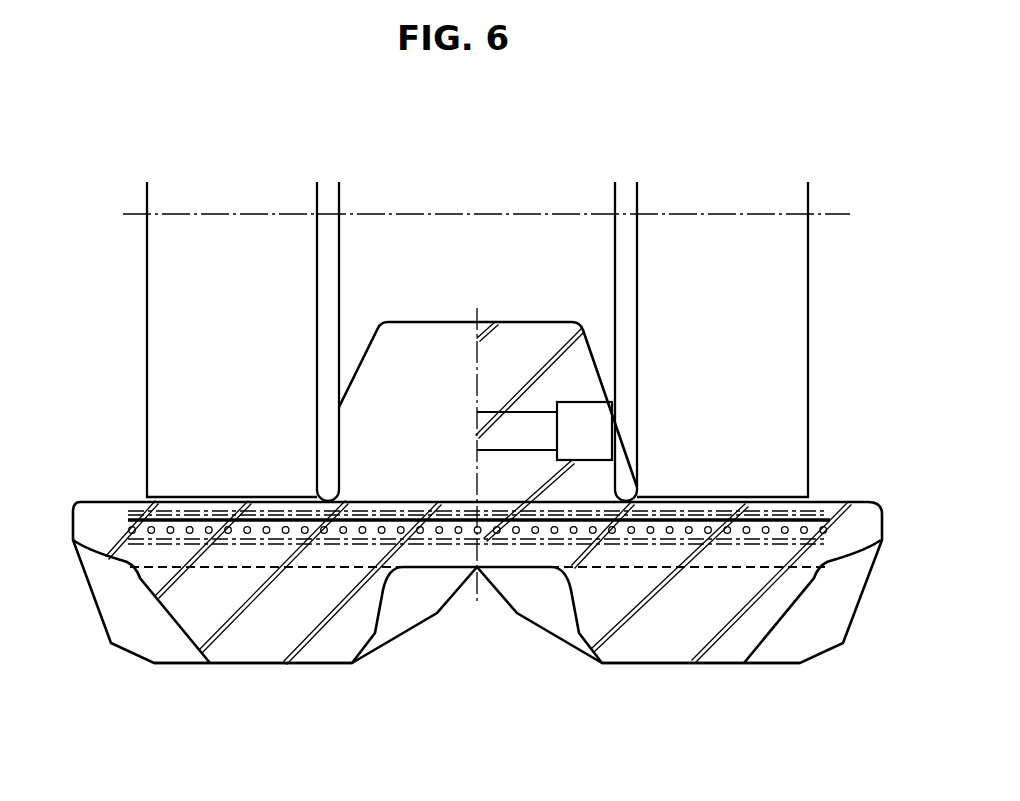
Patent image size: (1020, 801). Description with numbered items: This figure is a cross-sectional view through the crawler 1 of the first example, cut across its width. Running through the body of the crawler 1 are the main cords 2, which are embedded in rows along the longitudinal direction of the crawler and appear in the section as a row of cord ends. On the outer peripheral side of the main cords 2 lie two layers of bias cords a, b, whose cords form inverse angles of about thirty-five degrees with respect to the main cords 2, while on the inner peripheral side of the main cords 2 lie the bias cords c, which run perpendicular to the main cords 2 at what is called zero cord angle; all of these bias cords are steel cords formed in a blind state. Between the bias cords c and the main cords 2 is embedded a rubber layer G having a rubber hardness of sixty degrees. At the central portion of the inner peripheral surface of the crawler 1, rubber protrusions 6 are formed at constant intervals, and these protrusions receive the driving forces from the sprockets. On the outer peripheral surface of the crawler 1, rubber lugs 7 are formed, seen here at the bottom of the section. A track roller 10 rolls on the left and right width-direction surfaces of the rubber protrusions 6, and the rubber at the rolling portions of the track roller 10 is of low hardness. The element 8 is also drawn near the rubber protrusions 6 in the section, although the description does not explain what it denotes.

The crawler 1 is at (870, 512).
The main cords 2 is at (720, 541).
The rubber protrusions 6 is at (425, 347).
The rubber lugs 7 is at (327, 647).
The tread member 8 is at (585, 428).
The track roller 10 is at (502, 201).
The rubber layer G is at (130, 522).
The bias cords a is at (140, 552).
The bias cords b is at (130, 528).
The bias cords c is at (212, 512).